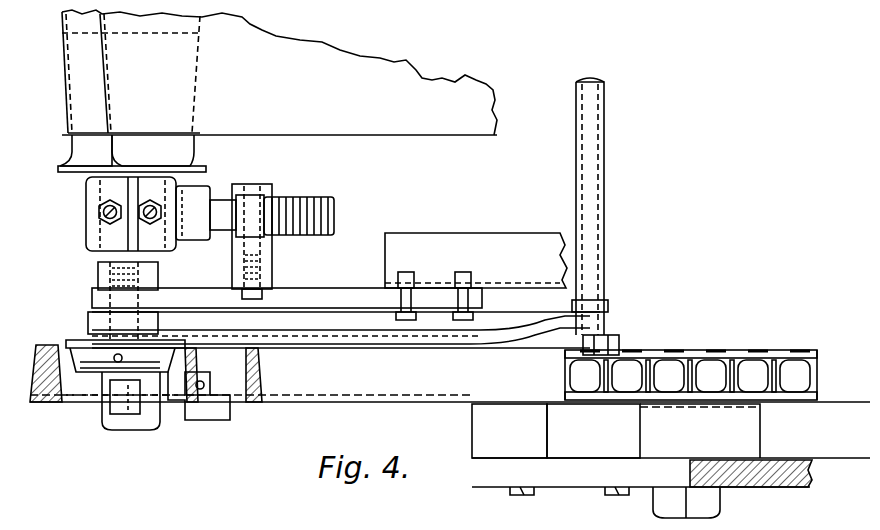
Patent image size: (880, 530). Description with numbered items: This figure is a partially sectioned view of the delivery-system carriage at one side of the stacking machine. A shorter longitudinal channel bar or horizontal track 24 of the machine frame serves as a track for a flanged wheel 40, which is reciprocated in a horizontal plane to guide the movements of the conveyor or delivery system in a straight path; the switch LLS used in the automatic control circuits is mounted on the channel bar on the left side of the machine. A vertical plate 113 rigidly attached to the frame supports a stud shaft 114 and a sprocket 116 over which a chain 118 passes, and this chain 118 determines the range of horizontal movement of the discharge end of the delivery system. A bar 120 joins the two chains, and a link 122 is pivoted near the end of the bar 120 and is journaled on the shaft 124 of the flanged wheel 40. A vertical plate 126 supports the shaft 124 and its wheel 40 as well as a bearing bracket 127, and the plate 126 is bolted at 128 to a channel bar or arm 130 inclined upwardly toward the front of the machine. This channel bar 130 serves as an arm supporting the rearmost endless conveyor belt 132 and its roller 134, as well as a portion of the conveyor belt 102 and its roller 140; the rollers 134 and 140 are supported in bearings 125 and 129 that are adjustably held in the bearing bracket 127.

The channel bar 24 is at (300, 400).
The flanged wheel 40 is at (78, 358).
The switch LLS is at (128, 412).
The conveyor belt 102 is at (68, 85).
The vertical plate 113 is at (585, 478).
The stud shaft 114 is at (690, 520).
The sprocket 116 is at (700, 370).
The chain 118 is at (762, 350).
The bar 120 is at (597, 184).
The link 122 is at (375, 328).
The shaft 124 is at (108, 323).
The bearing 125 is at (176, 255).
The vertical plate 126 is at (324, 310).
The bearing bracket 127 is at (272, 256).
The bolt 128 is at (462, 272).
The bearing 129 is at (90, 238).
The channel bar 130 is at (512, 240).
The conveyor belt 132 is at (306, 128).
The roller 134 is at (190, 150).
The roller 140 is at (74, 150).